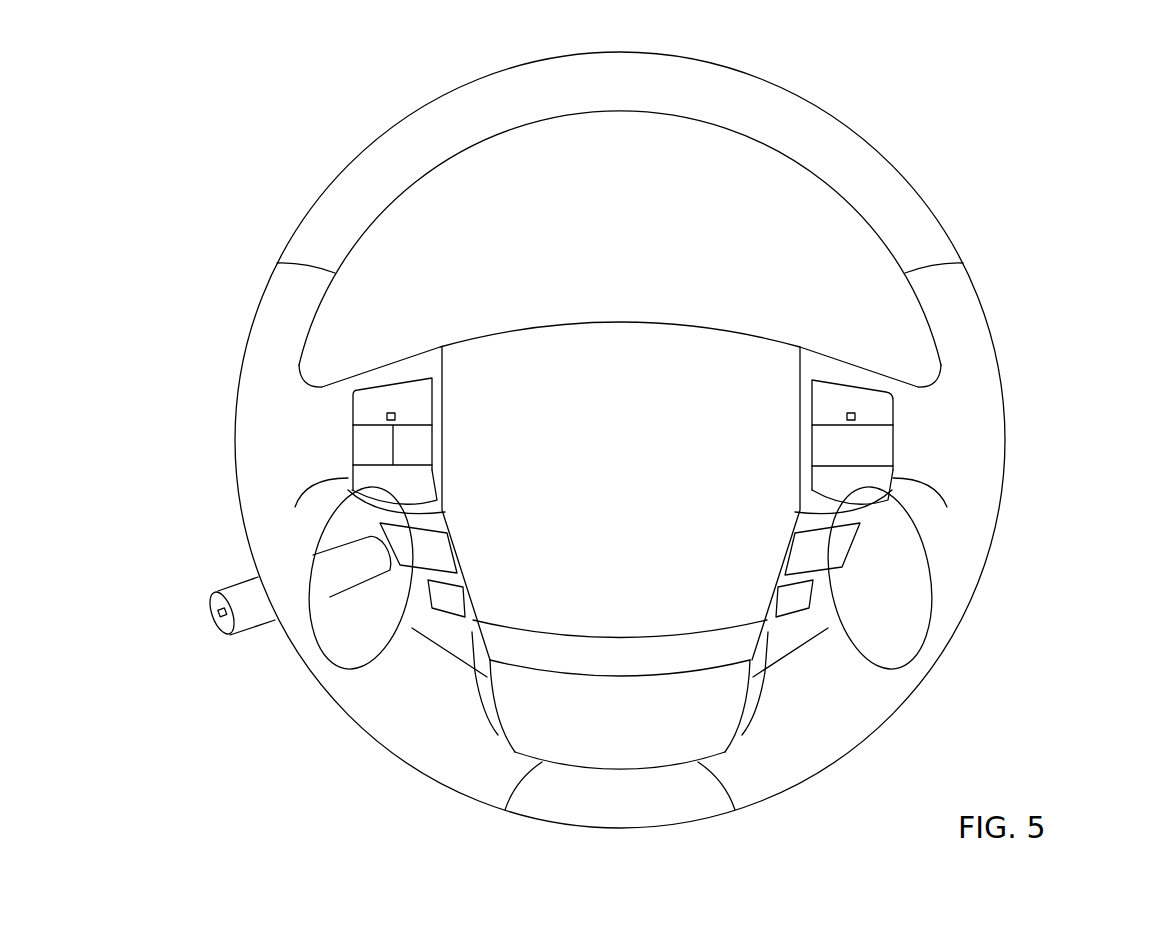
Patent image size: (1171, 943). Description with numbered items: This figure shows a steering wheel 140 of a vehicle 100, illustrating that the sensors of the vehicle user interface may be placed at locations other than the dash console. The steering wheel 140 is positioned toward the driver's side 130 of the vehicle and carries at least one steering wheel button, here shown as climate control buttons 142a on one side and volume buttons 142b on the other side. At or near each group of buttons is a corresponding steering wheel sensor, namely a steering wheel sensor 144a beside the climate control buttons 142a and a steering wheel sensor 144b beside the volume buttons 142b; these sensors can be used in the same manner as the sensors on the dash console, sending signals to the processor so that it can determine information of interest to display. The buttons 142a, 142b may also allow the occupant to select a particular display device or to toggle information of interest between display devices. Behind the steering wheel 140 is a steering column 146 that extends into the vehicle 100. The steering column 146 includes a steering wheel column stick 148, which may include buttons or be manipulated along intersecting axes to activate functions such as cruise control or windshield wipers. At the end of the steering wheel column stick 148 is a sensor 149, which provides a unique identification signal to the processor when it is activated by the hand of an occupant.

The vehicle 100 is at (658, 439).
The driver's side 130 is at (628, 439).
The steering wheel 140 is at (938, 206).
The climate control buttons 142a is at (352, 432).
The volume buttons 142b is at (893, 428).
The steering wheel sensor 144a is at (396, 417).
The steering wheel sensor 144b is at (847, 417).
The steering column 146 is at (275, 643).
The steering wheel column stick 148 is at (275, 587).
The sensor 149 is at (212, 620).